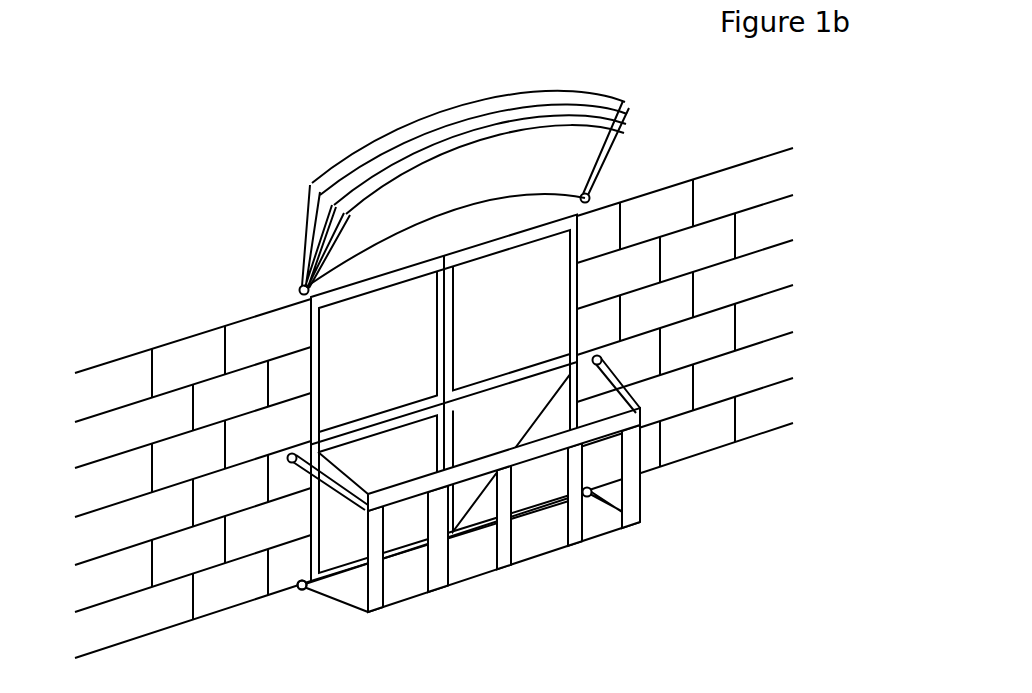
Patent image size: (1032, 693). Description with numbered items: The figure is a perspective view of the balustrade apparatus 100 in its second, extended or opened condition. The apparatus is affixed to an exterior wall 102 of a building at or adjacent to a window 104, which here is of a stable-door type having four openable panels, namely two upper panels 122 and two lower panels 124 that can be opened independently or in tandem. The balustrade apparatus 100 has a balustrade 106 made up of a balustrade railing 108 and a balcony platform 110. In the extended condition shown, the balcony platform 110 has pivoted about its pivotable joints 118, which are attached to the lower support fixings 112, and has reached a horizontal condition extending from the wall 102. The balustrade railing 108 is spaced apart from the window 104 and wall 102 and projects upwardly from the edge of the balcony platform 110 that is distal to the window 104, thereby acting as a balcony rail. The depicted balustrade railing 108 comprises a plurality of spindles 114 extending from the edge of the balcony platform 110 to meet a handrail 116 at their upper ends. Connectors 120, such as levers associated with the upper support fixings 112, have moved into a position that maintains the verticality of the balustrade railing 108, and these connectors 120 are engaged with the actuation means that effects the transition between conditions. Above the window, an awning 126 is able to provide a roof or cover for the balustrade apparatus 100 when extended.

The balustrade apparatus 100 is at (148, 210).
The exterior wall 102 is at (708, 294).
The window 104 is at (306, 337).
The balustrade 106 is at (662, 503).
The balustrade railing 108 is at (320, 523).
The balcony platform 110 is at (533, 543).
The support fixing 112 is at (285, 461).
The spindles 114 is at (635, 475).
The handrail 116 is at (635, 413).
The pivotable joints 118 is at (307, 600).
The connectors 120 is at (322, 488).
The upper panels 122 is at (563, 268).
The lower panels 124 is at (558, 386).
The awning 126 is at (624, 113).